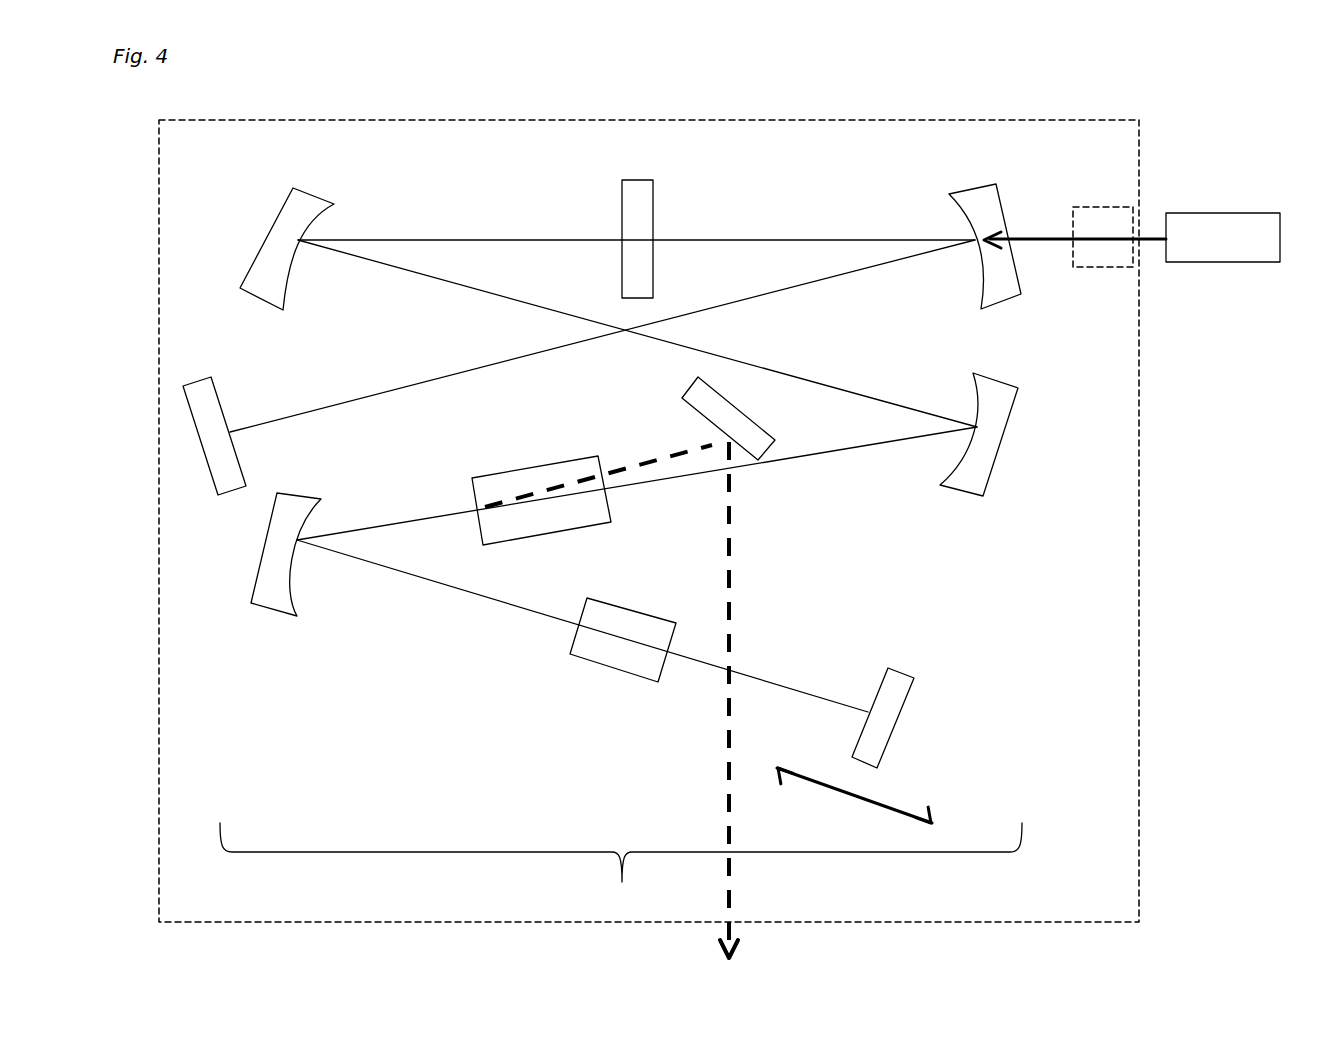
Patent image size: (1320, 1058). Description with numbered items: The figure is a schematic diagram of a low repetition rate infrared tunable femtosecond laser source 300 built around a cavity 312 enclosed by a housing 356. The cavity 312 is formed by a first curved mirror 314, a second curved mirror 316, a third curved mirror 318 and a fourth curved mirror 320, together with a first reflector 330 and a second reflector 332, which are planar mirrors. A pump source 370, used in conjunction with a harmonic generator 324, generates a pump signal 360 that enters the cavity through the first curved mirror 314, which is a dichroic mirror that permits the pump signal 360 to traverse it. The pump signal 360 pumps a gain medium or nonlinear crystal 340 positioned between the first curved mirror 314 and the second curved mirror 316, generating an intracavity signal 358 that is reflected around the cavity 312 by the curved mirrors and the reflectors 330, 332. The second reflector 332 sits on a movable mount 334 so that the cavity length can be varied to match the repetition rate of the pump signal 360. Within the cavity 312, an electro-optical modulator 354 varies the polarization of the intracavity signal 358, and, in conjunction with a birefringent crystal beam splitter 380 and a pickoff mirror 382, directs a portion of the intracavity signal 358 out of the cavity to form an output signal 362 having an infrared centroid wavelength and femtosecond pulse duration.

The laser source 300 is at (1190, 125).
The cavity 312 is at (621, 871).
The first curved mirror 314 is at (967, 217).
The second curved mirror 316 is at (285, 235).
The third curved mirror 318 is at (987, 482).
The fourth curved mirror 320 is at (263, 577).
The harmonic generator 324 is at (1100, 262).
The first reflector 330 is at (207, 395).
The second reflector 332 is at (897, 712).
The movable mount 334 is at (893, 807).
The nonlinear crystal 340 is at (650, 233).
The modulator 354 is at (592, 663).
The housing 356 is at (543, 120).
The intracavity signal 358 is at (838, 382).
The pump signal 360 is at (1032, 240).
The output signal 362 is at (733, 582).
The pump source 370 is at (1256, 257).
The birefringent crystal beam splitter 380 is at (523, 470).
The pickoff mirror 382 is at (708, 410).